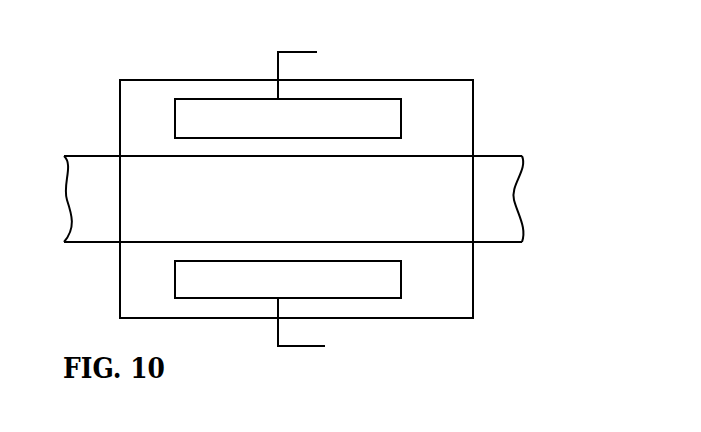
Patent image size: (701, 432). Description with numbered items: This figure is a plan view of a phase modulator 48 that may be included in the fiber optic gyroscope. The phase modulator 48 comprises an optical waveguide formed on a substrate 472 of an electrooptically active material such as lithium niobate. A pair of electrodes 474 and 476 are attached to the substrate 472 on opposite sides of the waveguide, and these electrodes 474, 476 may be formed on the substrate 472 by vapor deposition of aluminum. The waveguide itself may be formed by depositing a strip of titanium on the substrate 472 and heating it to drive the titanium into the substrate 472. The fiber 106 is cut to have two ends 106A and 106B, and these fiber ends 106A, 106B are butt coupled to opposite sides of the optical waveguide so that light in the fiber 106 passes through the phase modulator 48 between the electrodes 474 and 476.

The phase modulator 48 is at (363, 188).
The substrate 472 is at (474, 289).
The electrode 474 is at (362, 298).
The electrode 476 is at (403, 110).
The fiber 106 is at (314, 200).
The fiber end 106A is at (478, 168).
The fiber end 106B is at (121, 222).